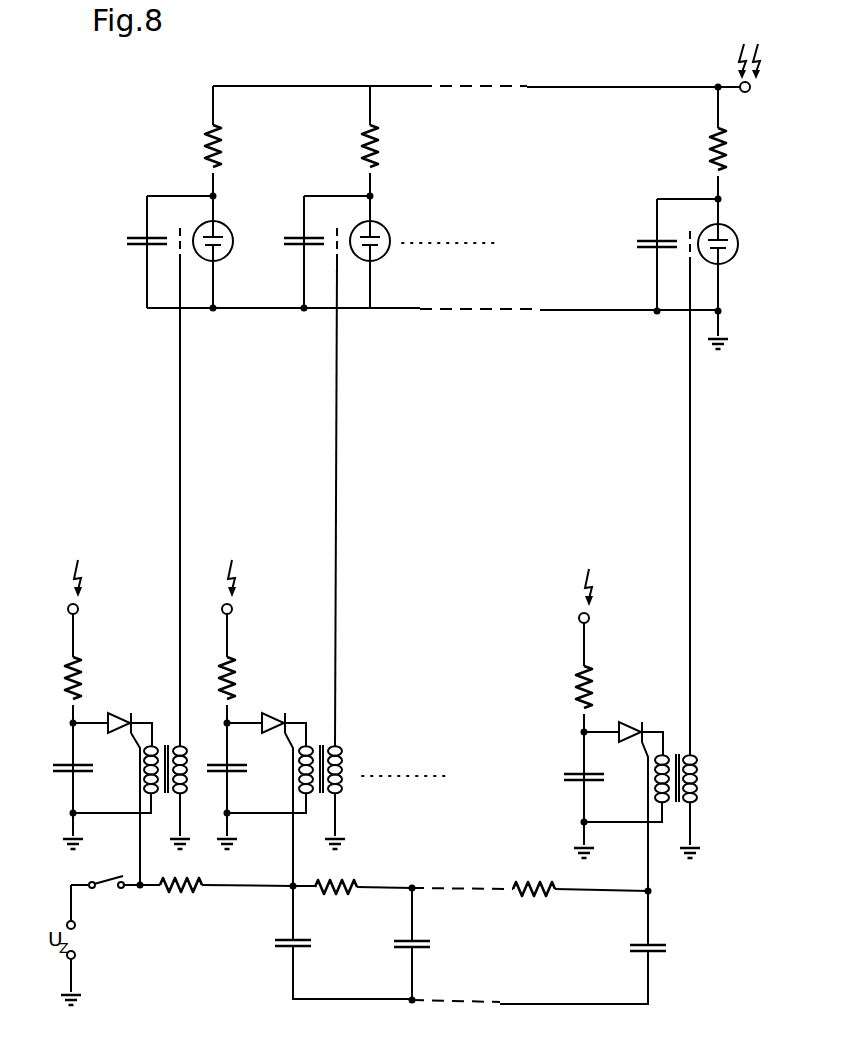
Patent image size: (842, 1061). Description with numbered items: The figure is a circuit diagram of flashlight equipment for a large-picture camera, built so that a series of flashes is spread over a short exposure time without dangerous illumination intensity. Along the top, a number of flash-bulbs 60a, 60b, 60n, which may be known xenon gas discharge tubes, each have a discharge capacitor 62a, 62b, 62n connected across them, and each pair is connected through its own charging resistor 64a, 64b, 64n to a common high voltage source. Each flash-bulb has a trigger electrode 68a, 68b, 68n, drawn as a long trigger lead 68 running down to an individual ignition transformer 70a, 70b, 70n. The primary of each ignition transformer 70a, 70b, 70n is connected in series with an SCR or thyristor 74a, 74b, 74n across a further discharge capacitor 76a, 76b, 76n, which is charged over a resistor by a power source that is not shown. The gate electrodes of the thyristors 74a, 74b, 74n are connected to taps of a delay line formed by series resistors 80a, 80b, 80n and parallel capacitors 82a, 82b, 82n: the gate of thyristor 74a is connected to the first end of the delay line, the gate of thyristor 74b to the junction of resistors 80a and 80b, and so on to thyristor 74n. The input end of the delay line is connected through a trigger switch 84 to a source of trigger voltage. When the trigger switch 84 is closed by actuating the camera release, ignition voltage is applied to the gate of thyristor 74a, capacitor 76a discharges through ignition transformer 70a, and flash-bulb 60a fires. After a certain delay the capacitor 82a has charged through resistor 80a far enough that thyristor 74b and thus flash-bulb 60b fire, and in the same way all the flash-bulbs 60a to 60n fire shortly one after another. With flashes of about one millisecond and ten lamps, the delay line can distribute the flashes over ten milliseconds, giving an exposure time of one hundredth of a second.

The flash-bulb 60a is at (220, 256).
The flash-bulb 60b is at (377, 256).
The flash-bulb 60n is at (725, 259).
The discharge capacitor 62a is at (127, 242).
The discharge capacitor 62b is at (284, 242).
The discharge capacitor 62n is at (637, 245).
The charging resistor 64a is at (218, 139).
The charging resistor 64b is at (375, 139).
The charging resistor 64n is at (723, 142).
The trigger electrode 68 is at (178, 492).
The trigger electrode 68a is at (178, 231).
The trigger electrode 68b is at (335, 231).
The trigger electrode 68n is at (688, 234).
The ignition transformer 70a is at (166, 744).
The ignition transformer 70b is at (320, 744).
The ignition transformer 70n is at (674, 752).
The thyristor 74a is at (122, 712).
The thyristor 74b is at (276, 712).
The thyristor 74n is at (632, 722).
The discharge capacitor 76a is at (77, 772).
The discharge capacitor 76b is at (231, 772).
The discharge capacitor 76n is at (589, 785).
The series resistor 80a is at (185, 893).
The series resistor 80b is at (347, 893).
The series resistor 80n is at (550, 895).
The parallel capacitor 82a is at (295, 946).
The parallel capacitor 82b is at (416, 948).
The parallel capacitor 82n is at (650, 952).
The trigger switch 84 is at (105, 890).